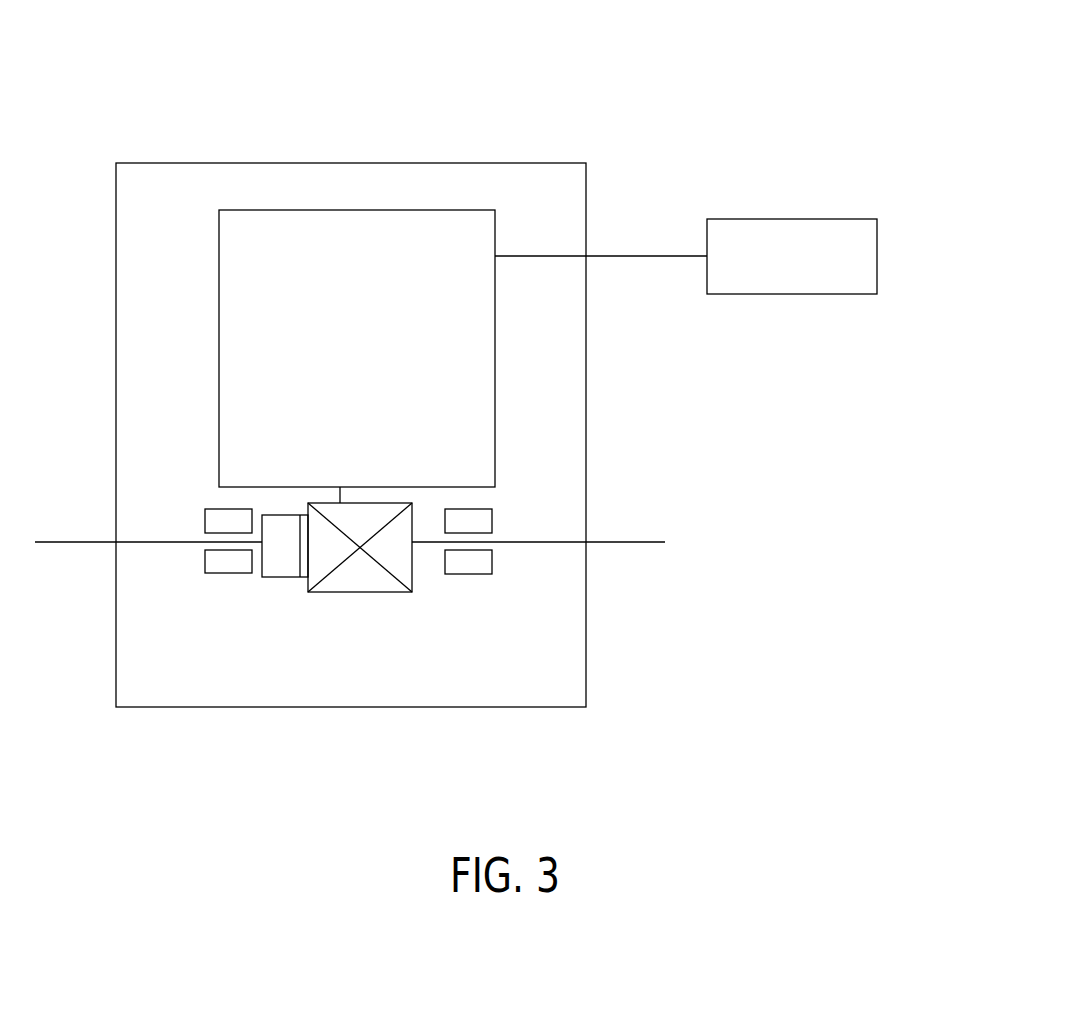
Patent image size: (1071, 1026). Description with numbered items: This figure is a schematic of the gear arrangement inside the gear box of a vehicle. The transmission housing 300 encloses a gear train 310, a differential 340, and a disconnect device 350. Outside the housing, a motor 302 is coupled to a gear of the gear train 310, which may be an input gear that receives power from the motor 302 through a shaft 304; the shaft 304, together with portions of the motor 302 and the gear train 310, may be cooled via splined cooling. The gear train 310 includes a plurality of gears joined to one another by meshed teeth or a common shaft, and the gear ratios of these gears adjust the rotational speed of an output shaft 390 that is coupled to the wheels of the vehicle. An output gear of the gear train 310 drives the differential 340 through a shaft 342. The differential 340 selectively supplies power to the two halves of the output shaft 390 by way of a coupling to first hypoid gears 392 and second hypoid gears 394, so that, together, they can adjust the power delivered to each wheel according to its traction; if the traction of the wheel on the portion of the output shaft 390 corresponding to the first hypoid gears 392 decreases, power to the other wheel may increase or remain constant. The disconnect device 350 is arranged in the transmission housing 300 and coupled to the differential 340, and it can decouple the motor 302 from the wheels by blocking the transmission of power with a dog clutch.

The transmission housing 300 is at (869, 46).
The motor 302 is at (771, 268).
The shaft 304 is at (565, 257).
The gear train 310 is at (378, 359).
The differential 340 is at (405, 592).
The shaft 342 is at (336, 497).
The disconnect device 350 is at (282, 577).
The output shaft 390 is at (630, 540).
The first hypoid gears 392 is at (205, 573).
The second hypoid gears 394 is at (492, 574).